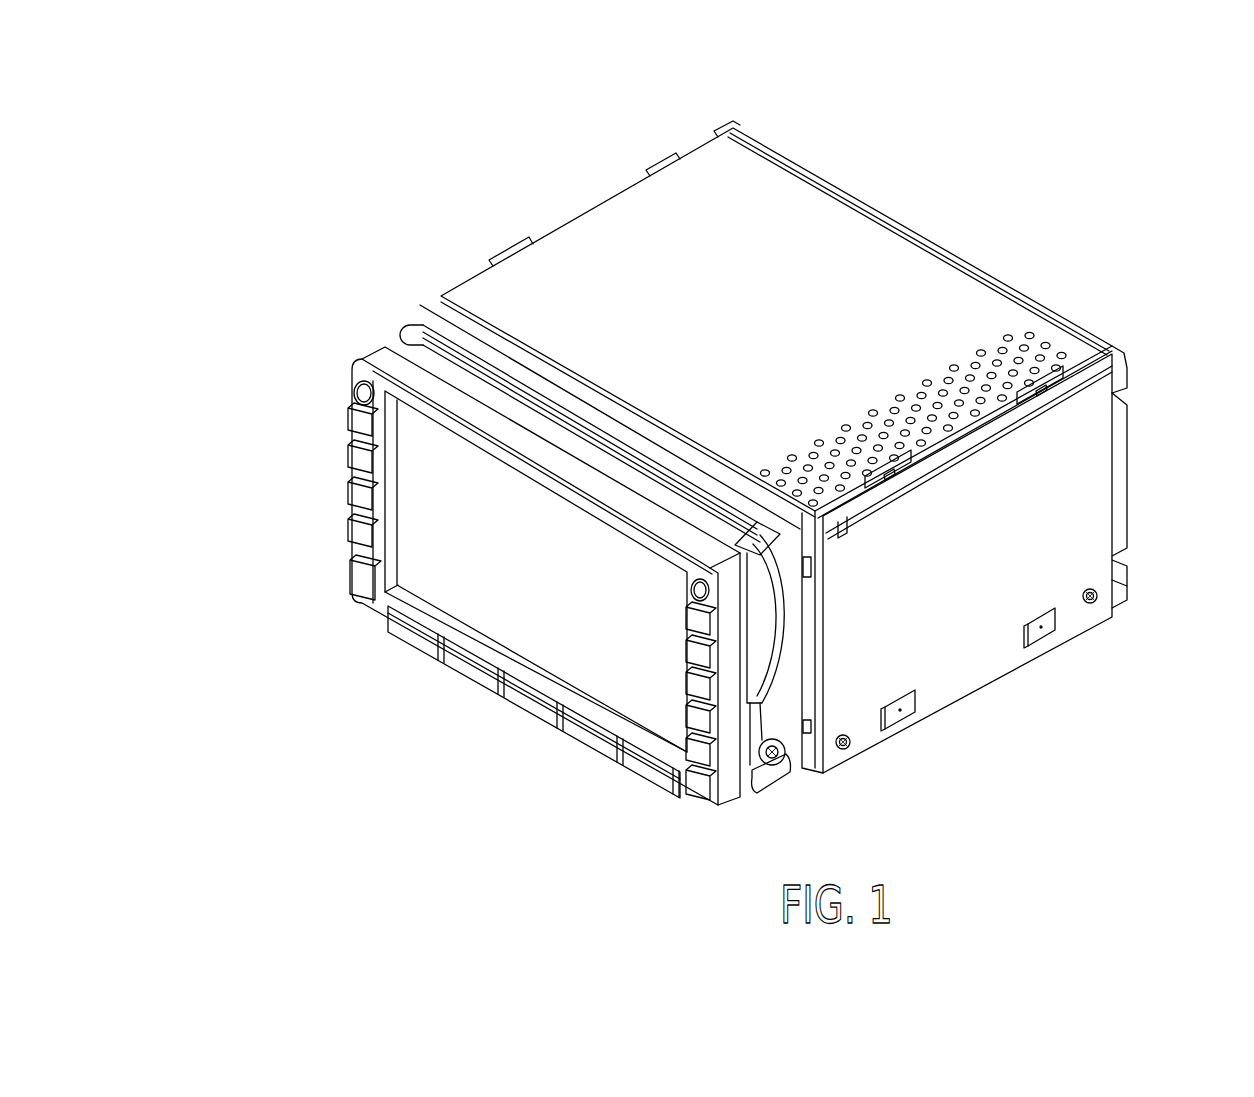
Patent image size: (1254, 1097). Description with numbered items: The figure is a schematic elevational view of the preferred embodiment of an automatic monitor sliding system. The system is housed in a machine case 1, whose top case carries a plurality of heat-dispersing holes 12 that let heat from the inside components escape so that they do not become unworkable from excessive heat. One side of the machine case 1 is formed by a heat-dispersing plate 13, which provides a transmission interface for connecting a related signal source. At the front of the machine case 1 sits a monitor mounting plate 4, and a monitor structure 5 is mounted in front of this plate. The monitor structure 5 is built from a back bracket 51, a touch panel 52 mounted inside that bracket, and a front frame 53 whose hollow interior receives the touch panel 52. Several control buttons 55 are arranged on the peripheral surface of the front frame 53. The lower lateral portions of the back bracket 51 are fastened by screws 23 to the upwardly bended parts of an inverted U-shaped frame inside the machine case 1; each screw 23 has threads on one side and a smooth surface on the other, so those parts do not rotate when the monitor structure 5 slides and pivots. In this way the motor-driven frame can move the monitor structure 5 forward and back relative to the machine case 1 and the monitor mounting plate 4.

The machine case 1 is at (958, 230).
The monitor mounting plate 4 is at (410, 297).
The heat-dispersing holes 12 is at (1041, 335).
The heat-dispersing plate 13 is at (1128, 474).
The monitor structure 5 is at (322, 458).
The back bracket 51 is at (417, 350).
The touch panel 52 is at (552, 633).
The front frame 53 is at (382, 362).
The control buttons 55 is at (357, 535).
The screws 23 is at (778, 760).